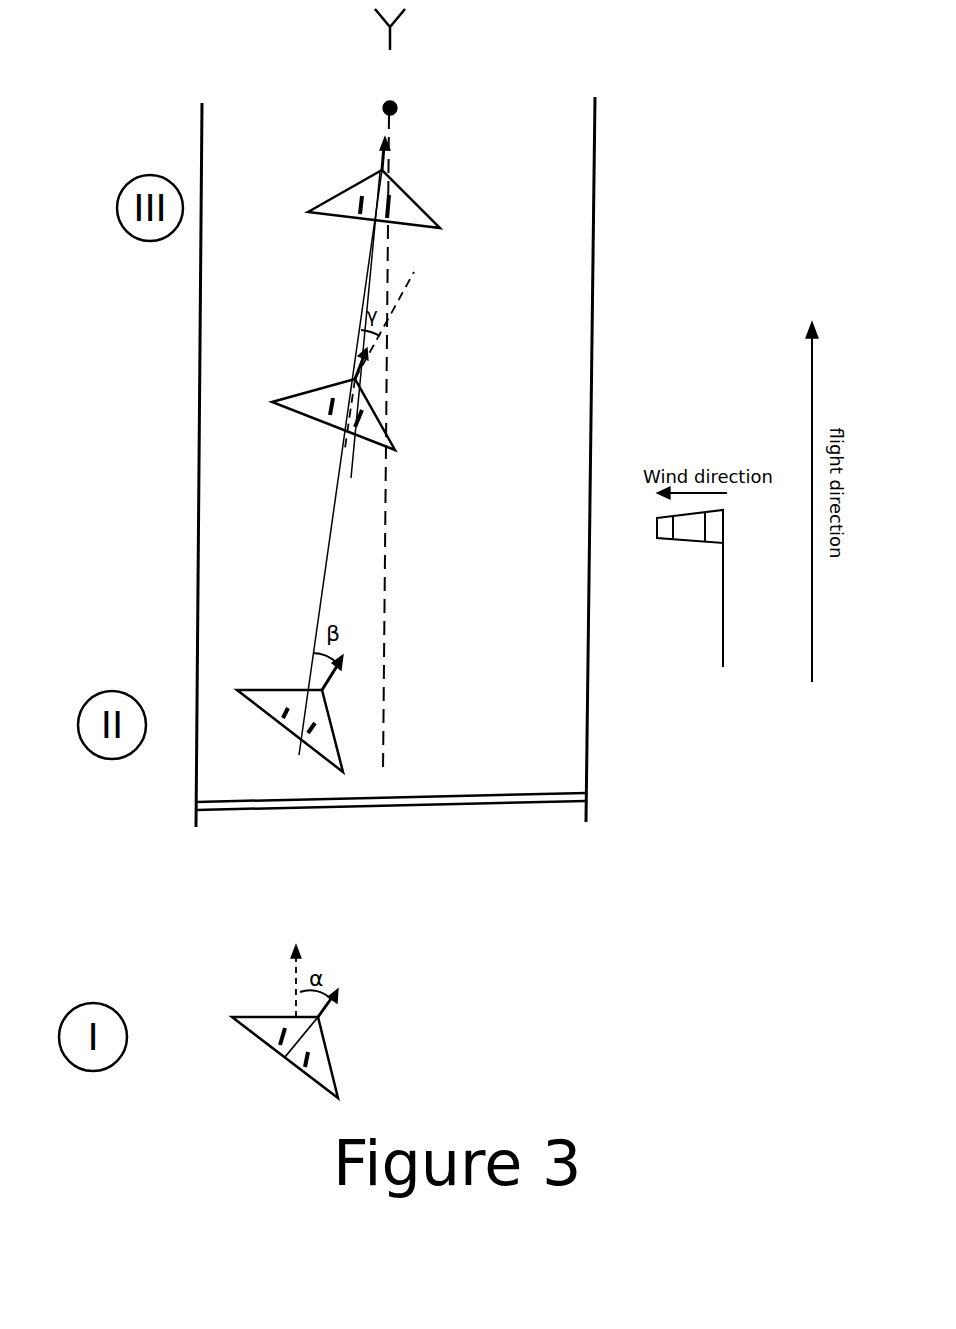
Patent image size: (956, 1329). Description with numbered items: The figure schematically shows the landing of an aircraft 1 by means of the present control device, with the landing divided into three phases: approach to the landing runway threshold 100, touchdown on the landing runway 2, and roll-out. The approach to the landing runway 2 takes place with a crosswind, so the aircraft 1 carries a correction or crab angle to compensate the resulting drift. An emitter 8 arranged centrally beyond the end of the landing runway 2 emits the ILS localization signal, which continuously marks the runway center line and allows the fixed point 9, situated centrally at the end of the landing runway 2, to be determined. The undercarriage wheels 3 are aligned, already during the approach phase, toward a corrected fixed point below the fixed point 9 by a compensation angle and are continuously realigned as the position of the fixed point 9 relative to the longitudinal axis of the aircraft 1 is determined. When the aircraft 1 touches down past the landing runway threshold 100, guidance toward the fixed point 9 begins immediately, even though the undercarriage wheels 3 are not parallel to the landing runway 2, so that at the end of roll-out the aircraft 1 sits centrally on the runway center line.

The aircraft 1 is at (428, 203).
The landing runway 2 is at (395, 462).
The undercarriage wheels 3 is at (315, 1058).
The emitter 8 is at (353, 23).
The fixed point 9 is at (370, 110).
The landing runway threshold 100 is at (587, 800).